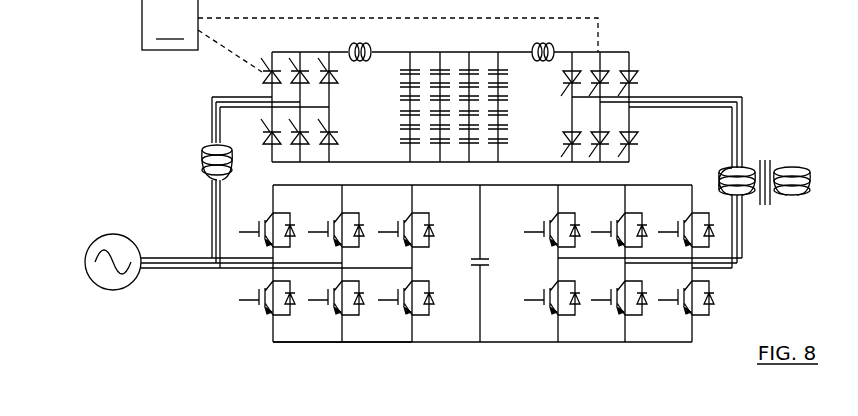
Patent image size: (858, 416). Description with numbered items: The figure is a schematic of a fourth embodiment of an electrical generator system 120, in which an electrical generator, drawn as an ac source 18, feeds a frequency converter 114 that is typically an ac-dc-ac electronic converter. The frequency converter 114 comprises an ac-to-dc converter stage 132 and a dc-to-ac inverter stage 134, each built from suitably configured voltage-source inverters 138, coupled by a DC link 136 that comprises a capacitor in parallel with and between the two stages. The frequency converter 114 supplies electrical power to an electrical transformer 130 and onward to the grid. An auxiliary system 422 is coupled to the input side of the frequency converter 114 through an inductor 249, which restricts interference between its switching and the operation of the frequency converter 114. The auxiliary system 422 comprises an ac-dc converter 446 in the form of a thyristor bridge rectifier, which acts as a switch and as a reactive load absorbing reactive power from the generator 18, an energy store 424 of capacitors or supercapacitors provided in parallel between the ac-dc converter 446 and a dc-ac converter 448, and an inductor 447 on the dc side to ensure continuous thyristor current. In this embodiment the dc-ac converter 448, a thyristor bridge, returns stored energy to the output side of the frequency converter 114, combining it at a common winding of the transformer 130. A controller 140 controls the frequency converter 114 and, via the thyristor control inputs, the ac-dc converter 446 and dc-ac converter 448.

The controller 140 is at (370, 36).
The ac-dc converter 446 is at (296, 48).
The inductor 447 is at (361, 62).
The energy store 424 is at (447, 48).
The dc-ac converter 448 is at (612, 52).
The auxiliary system 422 is at (477, 85).
The electrical transformer 130 is at (785, 162).
The inductor 249 is at (200, 167).
The generator 18 is at (107, 286).
The generator system 120 is at (507, 286).
The frequency converter 114 is at (268, 336).
The ac-to-dc converter stage 132 is at (333, 343).
The DC link 136 is at (478, 330).
The dc-to-ac inverter stage 134 is at (640, 343).
The voltage-source inverter 138 is at (430, 215).